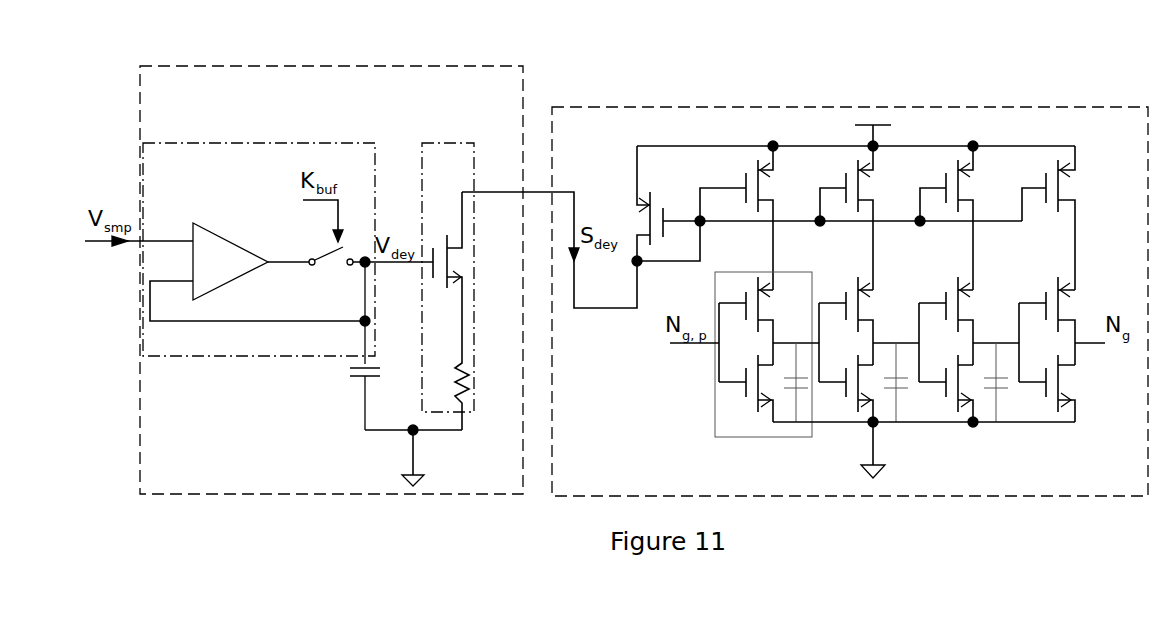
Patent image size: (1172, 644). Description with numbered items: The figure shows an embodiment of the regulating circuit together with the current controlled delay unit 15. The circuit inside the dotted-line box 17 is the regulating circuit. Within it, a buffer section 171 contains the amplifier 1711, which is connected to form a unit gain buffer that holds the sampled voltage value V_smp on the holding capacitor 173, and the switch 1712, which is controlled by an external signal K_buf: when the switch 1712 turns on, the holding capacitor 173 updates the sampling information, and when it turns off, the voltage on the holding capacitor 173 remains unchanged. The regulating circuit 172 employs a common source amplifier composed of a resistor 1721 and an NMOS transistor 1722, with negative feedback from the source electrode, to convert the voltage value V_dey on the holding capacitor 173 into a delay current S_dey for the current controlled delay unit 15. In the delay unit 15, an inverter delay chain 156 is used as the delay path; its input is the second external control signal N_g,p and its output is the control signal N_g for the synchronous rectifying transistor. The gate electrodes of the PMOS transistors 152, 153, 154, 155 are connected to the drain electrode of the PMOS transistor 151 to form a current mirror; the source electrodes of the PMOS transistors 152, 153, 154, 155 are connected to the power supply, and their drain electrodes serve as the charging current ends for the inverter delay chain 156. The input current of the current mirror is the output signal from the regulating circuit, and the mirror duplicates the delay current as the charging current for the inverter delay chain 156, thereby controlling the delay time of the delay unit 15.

The regulating circuit 17 is at (303, 63).
The unit gain buffer 171 is at (277, 140).
The regulating circuit 172 is at (445, 143).
The amplifier 1711 is at (230, 233).
The switch 1712 is at (333, 273).
The holding capacitor 173 is at (373, 358).
The resistor 1721 is at (470, 343).
The NMOS transistor 1722 is at (467, 255).
The current controlled delay unit 15 is at (908, 105).
The PMOS transistor 151 is at (662, 188).
The PMOS transistor 152 is at (777, 192).
The PMOS transistor 153 is at (875, 193).
The PMOS transistor 154 is at (977, 193).
The PMOS transistor 155 is at (1077, 193).
The inverter delay chain 156 is at (797, 272).